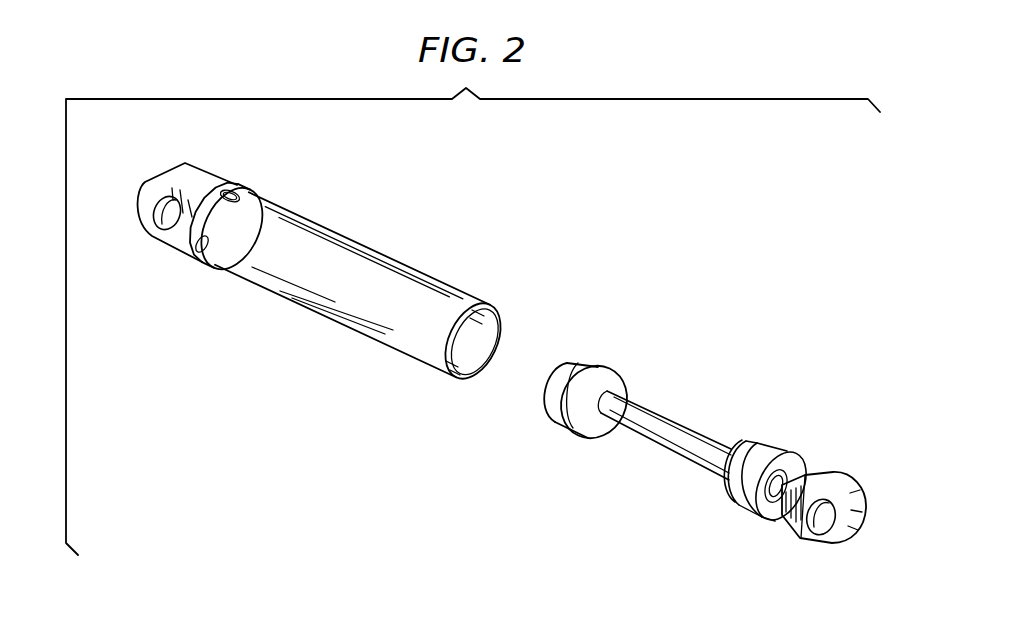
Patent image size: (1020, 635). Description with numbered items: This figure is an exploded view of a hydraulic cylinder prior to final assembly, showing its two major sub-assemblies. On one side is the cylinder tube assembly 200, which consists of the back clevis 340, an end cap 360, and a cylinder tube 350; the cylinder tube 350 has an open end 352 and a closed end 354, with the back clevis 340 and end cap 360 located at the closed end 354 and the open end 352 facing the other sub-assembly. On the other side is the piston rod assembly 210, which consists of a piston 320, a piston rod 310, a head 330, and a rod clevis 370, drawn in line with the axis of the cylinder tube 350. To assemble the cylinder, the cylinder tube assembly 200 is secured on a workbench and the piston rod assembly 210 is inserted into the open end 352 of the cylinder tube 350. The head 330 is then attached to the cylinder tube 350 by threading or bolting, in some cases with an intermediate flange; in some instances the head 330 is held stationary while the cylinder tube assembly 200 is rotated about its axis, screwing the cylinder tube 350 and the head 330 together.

The cylinder tube assembly 200 is at (248, 326).
The piston rod assembly 210 is at (637, 503).
The piston rod 310 is at (659, 452).
The piston 320 is at (590, 371).
The head 330 is at (806, 456).
The back clevis 340 is at (150, 235).
The cylinder tube 350 is at (357, 277).
The open end 352 is at (452, 357).
The closed end 354 is at (250, 195).
The end cap 360 is at (207, 220).
The rod clevis 370 is at (808, 538).